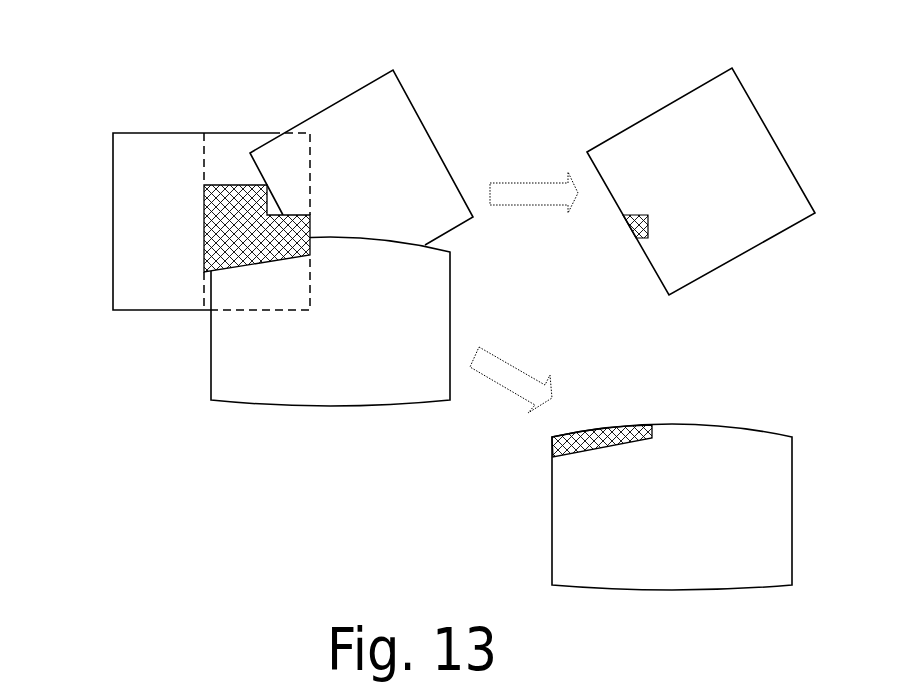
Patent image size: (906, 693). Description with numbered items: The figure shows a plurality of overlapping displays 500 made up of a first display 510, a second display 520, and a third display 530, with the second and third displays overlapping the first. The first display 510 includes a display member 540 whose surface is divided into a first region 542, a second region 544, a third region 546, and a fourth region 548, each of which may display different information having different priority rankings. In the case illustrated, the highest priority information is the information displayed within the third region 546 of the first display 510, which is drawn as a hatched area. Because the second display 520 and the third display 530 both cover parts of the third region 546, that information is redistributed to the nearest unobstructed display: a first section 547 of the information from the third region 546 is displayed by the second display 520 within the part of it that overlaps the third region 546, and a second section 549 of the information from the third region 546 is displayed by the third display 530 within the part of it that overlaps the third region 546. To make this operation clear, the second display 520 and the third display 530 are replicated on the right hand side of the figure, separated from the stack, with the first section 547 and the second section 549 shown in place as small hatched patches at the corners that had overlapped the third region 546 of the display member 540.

The plurality of overlapping displays 500 is at (208, 58).
The first display 510 is at (160, 113).
The second display 520 is at (342, 85).
The third display 530 is at (195, 380).
The display member 540 is at (132, 313).
The first region 542 is at (177, 178).
The second region 544 is at (251, 182).
The third region 546 is at (251, 236).
The first section 547 is at (327, 212).
The fourth region 548 is at (257, 304).
The second section 549 is at (300, 253).